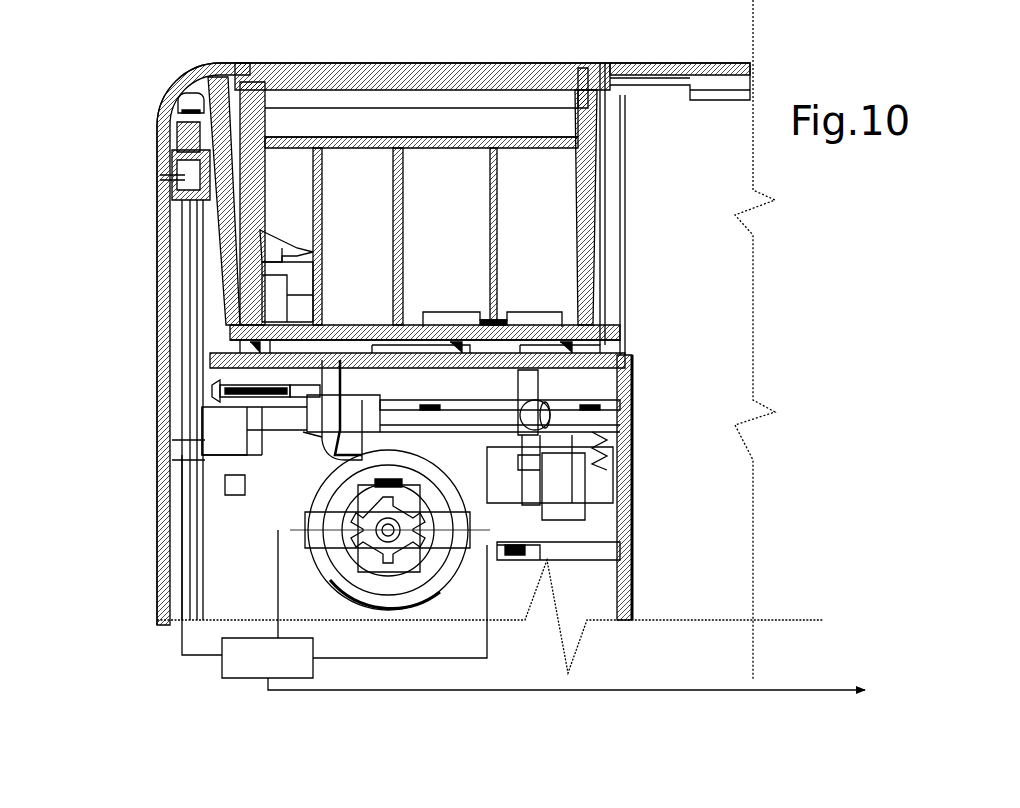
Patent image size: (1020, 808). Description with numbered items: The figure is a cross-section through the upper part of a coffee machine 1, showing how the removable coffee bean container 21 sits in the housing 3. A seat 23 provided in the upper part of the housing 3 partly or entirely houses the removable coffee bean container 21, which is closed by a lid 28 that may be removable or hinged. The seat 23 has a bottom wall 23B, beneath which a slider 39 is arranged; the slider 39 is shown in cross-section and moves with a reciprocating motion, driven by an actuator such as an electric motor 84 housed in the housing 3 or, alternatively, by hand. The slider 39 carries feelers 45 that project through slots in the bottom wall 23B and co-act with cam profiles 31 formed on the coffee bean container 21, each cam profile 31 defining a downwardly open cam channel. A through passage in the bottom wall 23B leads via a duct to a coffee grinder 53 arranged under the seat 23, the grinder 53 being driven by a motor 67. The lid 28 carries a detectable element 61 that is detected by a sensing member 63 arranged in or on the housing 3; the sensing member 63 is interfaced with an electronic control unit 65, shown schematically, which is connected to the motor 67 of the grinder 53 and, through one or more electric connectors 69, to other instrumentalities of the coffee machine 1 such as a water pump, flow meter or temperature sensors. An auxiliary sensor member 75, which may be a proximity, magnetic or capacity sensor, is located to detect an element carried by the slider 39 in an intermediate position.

The coffee machine 1 is at (108, 300).
The housing 3 is at (155, 282).
The removable coffee bean container 21 is at (552, 208).
The seat 23 is at (240, 232).
The bottom wall 23B is at (240, 372).
The lid 28 is at (452, 70).
The cam profile 31 is at (305, 272).
The slider 39 is at (447, 338).
The feeler 45 is at (283, 262).
The coffee grinder 53 is at (332, 448).
The detectable element 61 is at (192, 98).
The sensing member 63 is at (176, 140).
The electronic control unit 65 is at (245, 665).
The motor 67 is at (352, 565).
The electric connector 69 is at (640, 690).
The auxiliary sensor member 75 is at (605, 385).
The electric motor 84 is at (225, 482).